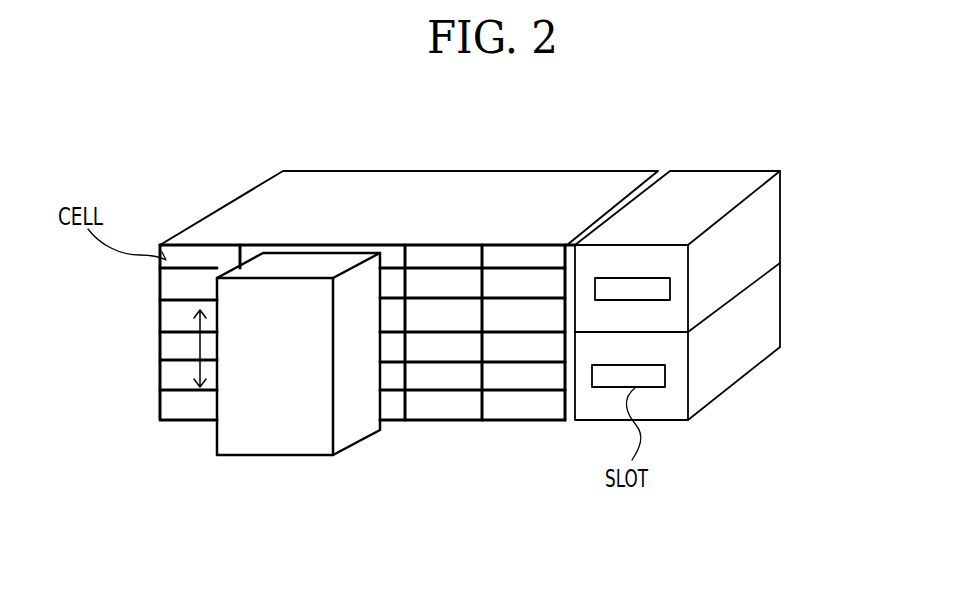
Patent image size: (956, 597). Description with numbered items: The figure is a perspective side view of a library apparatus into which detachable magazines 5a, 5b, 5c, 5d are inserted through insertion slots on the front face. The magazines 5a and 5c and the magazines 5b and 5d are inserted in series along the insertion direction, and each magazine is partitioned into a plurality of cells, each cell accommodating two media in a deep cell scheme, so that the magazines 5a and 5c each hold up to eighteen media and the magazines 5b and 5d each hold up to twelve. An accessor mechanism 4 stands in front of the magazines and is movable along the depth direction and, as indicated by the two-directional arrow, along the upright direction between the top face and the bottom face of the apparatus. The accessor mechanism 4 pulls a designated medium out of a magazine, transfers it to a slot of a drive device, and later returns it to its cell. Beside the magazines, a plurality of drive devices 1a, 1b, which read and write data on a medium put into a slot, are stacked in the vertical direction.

The drive device 1a is at (780, 208).
The drive device 1b is at (780, 312).
The accessor mechanism 4 is at (263, 456).
The magazine 5a is at (160, 290).
The magazine 5b is at (460, 245).
The magazine 5c is at (160, 375).
The magazine 5d is at (490, 421).